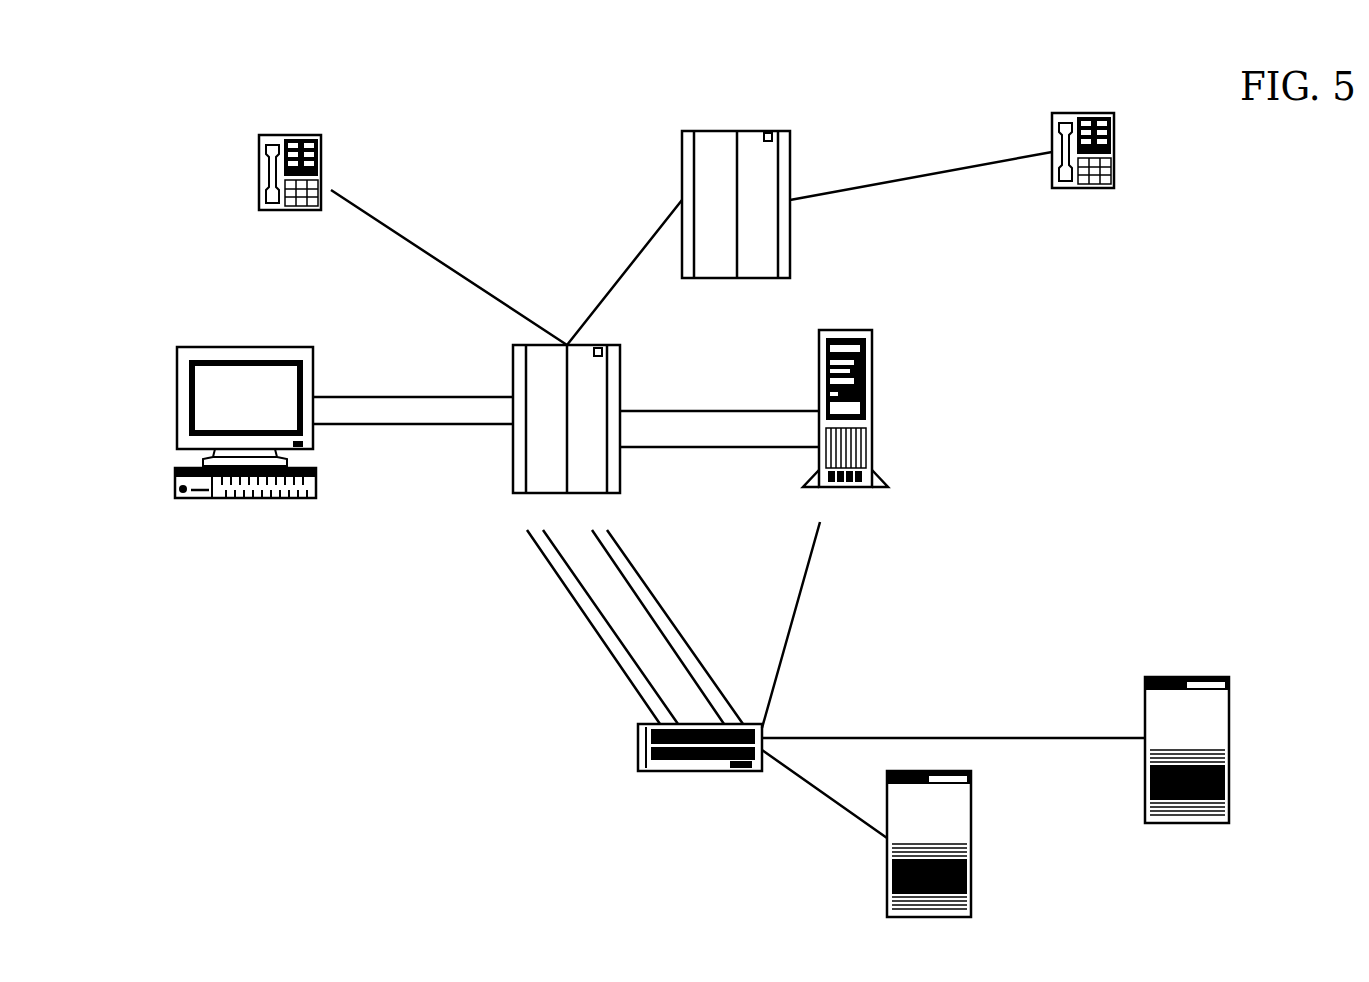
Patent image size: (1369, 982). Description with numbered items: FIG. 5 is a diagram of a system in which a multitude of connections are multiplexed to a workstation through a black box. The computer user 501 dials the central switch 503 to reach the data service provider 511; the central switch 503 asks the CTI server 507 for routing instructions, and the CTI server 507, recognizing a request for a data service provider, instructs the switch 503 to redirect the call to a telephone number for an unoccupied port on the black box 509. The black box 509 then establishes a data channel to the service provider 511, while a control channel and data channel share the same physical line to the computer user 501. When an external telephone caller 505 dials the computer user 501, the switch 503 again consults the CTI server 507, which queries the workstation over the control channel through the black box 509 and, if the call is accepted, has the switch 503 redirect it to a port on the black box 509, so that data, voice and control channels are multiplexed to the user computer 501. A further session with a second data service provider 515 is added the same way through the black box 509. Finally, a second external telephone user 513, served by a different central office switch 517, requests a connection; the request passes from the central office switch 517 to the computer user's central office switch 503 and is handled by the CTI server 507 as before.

The computer user 501 is at (245, 424).
The central switch 503 is at (585, 431).
The external telephone caller 505 is at (285, 172).
The CTI server 507 is at (845, 411).
The black box 509 is at (678, 775).
The data service provider 511 is at (1195, 756).
The second external telephone user 513 is at (1081, 152).
The second data service provider 515 is at (929, 857).
The central office switch 517 is at (737, 207).